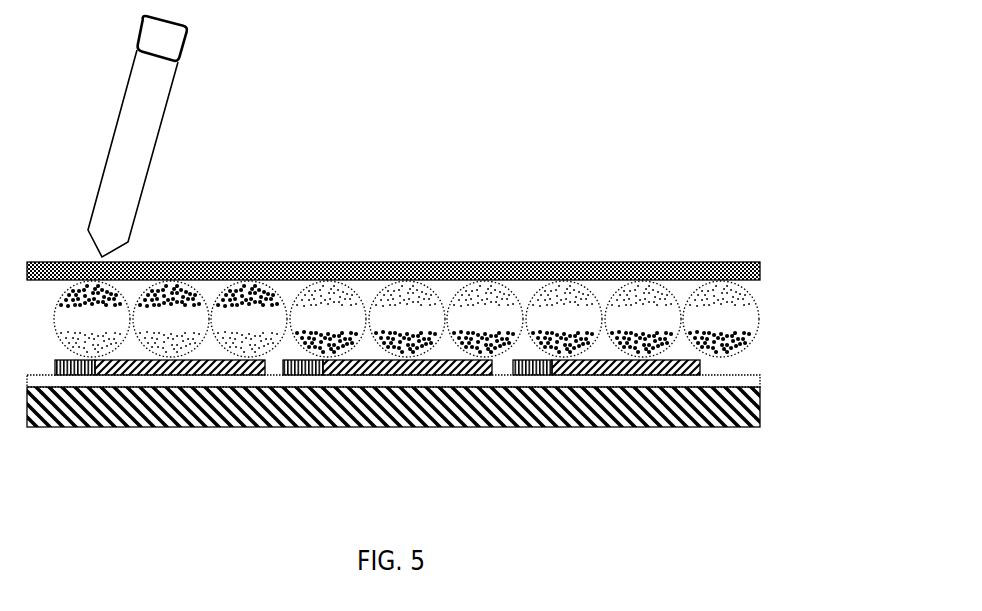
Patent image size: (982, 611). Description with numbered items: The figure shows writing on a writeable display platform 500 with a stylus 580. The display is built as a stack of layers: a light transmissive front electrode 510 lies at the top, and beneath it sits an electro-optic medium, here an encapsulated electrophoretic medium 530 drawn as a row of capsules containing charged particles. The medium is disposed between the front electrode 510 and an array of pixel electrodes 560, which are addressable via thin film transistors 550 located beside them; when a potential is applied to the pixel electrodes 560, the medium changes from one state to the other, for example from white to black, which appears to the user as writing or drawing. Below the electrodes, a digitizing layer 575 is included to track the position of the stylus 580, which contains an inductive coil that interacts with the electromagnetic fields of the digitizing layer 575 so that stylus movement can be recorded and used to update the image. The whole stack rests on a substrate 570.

The electrophoretic display device 500 is at (705, 111).
The light transmissive front electrode 510 is at (640, 270).
The encapsulated electrophoretic medium 530 is at (770, 318).
The thin film transistors 550 is at (533, 375).
The pixel electrodes 560 is at (657, 375).
The substrate 570 is at (98, 418).
The digitizing layer 575 is at (753, 382).
The stylus 580 is at (145, 128).